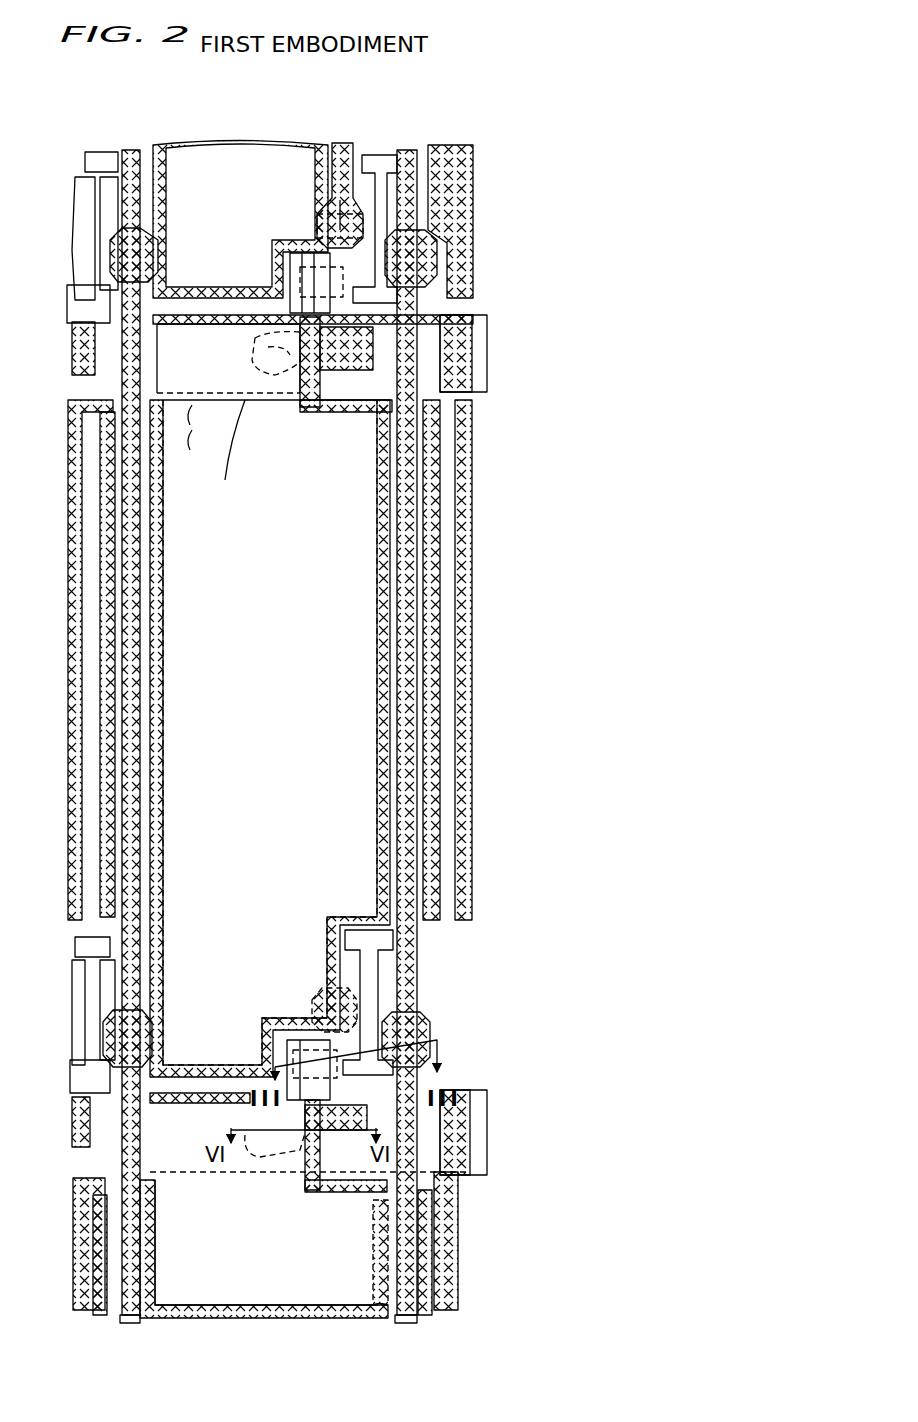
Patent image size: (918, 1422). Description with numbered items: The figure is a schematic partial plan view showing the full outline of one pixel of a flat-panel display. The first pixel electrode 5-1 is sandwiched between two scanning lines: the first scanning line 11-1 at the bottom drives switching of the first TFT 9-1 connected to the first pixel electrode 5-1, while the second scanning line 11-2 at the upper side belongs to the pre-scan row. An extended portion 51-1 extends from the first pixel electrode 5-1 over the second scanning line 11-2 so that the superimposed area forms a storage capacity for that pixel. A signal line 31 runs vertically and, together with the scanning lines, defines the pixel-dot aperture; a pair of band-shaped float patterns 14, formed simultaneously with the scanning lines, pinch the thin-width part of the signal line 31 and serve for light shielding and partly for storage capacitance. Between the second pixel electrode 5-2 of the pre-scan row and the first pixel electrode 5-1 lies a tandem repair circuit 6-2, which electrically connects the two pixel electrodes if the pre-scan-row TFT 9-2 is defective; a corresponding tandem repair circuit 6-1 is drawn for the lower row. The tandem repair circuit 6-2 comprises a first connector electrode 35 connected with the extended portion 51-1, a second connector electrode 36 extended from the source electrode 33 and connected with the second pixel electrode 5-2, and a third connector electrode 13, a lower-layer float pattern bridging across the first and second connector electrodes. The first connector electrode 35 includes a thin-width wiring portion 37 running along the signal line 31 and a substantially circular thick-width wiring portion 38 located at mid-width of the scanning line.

The second pixel electrode 5-2 is at (178, 148).
The TFT for the pre-scan-row pixel 9-2 is at (388, 142).
The source electrode 33 is at (355, 195).
The second connector electrode 36 is at (332, 254).
The second scanning line 11-2 is at (475, 365).
The tandem repair circuit 6-2 is at (326, 262).
The extended portion 51-1 is at (228, 358).
The thin-width wiring portion 37 is at (262, 385).
The thick-width wiring portion 38 is at (252, 405).
The third connector electrode 13 is at (322, 350).
The first connector electrode 35 is at (190, 400).
The first pixel electrode 5-1 is at (270, 738).
The first TFT 9-1 is at (380, 930).
The tandem repair circuit 6-1 is at (313, 1035).
The first scanning line 11-1 is at (475, 1128).
The signal line 31 is at (130, 1323).
The band-shaped float pattern 14 is at (405, 1323).